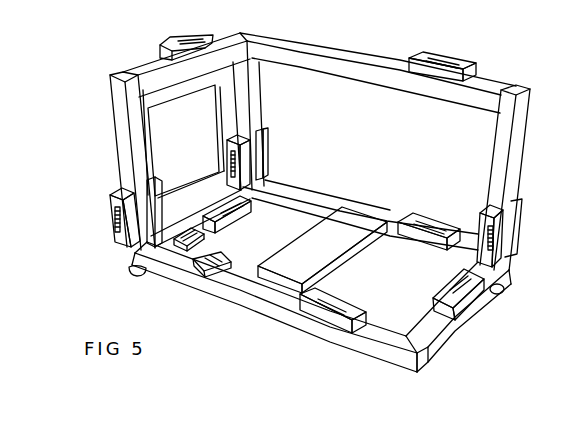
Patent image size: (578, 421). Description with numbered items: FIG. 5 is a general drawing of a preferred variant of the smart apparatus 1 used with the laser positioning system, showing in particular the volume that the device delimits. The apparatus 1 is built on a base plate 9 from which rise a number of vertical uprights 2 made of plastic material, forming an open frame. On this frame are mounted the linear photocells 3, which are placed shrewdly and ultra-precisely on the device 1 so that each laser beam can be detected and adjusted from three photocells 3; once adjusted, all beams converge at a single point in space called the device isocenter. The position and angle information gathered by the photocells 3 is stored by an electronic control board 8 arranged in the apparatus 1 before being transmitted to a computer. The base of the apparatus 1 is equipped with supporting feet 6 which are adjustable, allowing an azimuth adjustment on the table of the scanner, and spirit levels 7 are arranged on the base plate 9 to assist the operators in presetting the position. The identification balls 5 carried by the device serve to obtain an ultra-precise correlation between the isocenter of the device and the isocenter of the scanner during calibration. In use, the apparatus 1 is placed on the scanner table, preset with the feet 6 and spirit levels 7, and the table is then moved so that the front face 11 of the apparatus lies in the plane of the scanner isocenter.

The apparatus 1 is at (319, 69).
The vertical uprights 2 is at (320, 156).
The linear photocells 3 is at (314, 183).
The identification balls 5 is at (183, 84).
The supporting feet 6 is at (320, 284).
The spirit levels 7 is at (203, 252).
The electronic control board 8 is at (322, 250).
The base plate 9 is at (321, 276).
The front face 11 is at (158, 100).